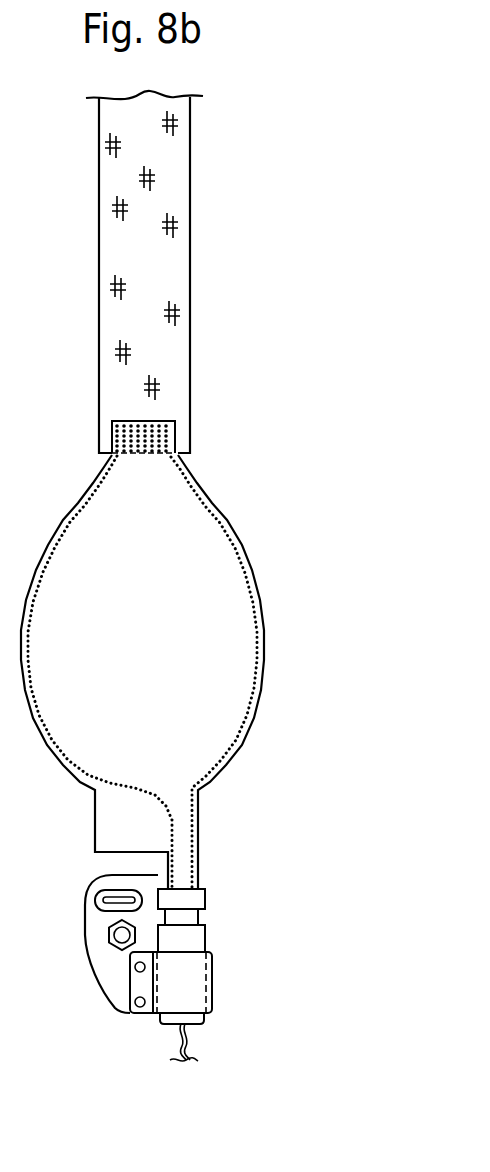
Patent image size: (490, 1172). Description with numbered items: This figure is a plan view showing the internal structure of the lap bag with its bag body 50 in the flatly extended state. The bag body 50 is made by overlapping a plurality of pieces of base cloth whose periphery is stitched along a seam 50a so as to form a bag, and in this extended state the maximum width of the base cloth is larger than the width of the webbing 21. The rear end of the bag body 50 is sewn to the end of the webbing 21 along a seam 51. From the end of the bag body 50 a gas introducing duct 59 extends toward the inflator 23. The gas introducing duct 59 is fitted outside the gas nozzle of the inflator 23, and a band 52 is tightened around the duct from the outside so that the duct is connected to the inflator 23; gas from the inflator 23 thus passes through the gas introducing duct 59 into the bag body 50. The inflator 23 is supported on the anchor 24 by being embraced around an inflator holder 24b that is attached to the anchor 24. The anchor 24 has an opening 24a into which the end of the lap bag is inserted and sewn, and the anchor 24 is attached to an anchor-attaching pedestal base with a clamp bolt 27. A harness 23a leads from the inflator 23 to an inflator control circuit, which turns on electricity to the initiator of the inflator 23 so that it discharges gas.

The webbing 21 is at (177, 250).
The seam 51 is at (165, 428).
The bag body 50 is at (268, 602).
The seam 50a is at (32, 618).
The gas introducing duct 59 is at (176, 834).
The band 52 is at (190, 902).
The inflator 23 is at (195, 937).
The anchor 24 is at (113, 975).
The opening 24a is at (110, 923).
The inflator holder 24b is at (197, 1002).
The clamp bolt 27 is at (104, 935).
The harness 23a is at (177, 1040).